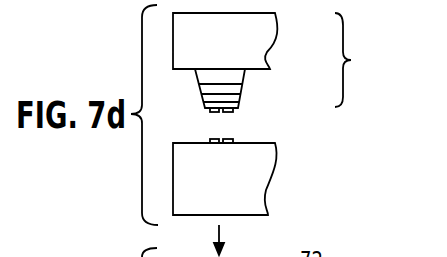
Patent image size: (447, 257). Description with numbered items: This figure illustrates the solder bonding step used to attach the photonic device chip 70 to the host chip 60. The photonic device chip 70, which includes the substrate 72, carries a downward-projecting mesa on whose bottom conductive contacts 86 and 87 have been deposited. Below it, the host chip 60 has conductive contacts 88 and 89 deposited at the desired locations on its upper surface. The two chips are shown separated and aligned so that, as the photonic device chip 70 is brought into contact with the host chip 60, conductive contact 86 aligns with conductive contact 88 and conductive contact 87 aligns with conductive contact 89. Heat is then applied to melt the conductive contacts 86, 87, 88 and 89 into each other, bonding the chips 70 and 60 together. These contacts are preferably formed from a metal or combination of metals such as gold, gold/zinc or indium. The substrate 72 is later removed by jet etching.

The host chip 60 is at (275, 180).
The photonic device chip 70 is at (351, 60).
The substrate 72 is at (276, 25).
The conductive contact 86 is at (233, 110).
The conductive contact 87 is at (210, 110).
The conductive contact 88 is at (233, 141).
The conductive contact 89 is at (210, 141).